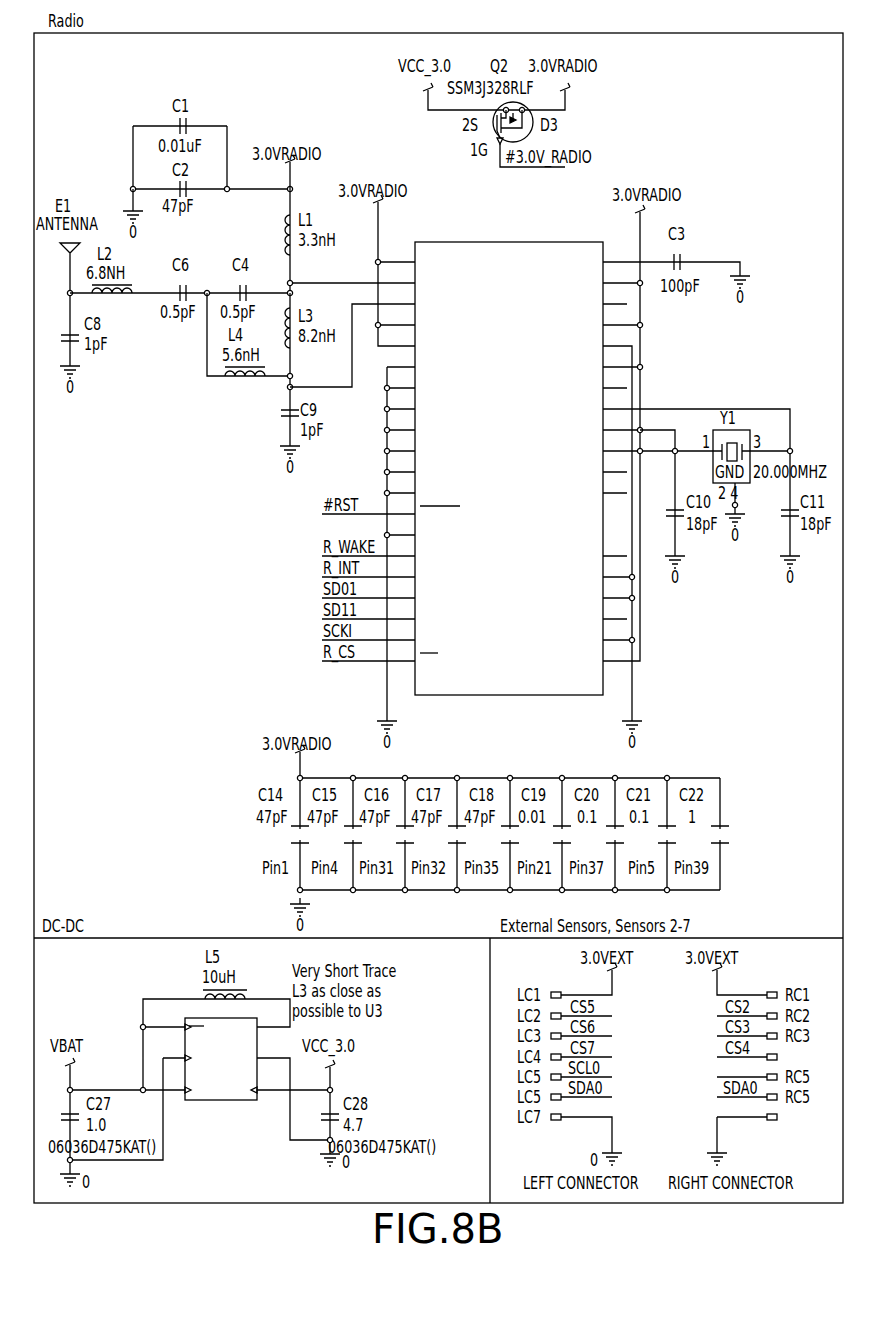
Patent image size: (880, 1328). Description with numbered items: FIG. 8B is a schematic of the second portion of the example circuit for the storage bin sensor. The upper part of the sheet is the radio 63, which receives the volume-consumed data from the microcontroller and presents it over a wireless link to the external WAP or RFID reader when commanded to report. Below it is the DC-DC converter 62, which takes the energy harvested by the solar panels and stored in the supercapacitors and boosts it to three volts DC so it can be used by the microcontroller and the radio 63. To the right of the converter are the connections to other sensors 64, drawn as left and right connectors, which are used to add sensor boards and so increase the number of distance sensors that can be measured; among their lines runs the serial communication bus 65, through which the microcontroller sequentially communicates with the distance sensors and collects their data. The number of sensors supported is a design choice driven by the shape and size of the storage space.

The DC-DC converter 62 is at (255, 1107).
The radio 63 is at (471, 236).
The connections to other sensors 64 is at (790, 1121).
The serial communication bus 65 is at (713, 1062).